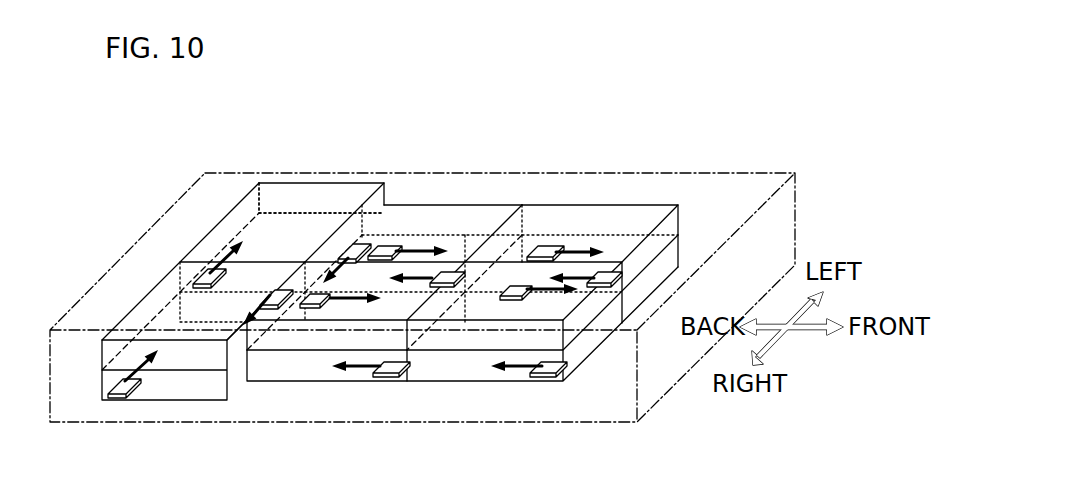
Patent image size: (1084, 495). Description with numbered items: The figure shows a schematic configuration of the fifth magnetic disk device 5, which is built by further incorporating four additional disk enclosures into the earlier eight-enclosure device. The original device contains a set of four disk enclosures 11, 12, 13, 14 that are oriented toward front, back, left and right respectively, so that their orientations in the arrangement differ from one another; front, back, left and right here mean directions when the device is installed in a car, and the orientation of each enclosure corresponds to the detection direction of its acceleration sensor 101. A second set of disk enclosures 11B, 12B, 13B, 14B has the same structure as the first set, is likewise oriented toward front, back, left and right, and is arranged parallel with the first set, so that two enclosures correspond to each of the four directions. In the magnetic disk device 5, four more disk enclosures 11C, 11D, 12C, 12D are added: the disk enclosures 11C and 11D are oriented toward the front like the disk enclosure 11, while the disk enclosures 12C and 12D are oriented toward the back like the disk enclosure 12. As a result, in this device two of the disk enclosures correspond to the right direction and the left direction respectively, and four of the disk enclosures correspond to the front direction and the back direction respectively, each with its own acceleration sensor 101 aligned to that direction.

The magnetic disk device 5 is at (720, 173).
The disk enclosure 11 is at (357, 381).
The disk enclosure 11B is at (407, 205).
The disk enclosure 11C is at (517, 381).
The disk enclosure 11D is at (622, 235).
The disk enclosure 12 is at (318, 320).
The disk enclosure 12B is at (465, 235).
The disk enclosure 12C is at (450, 320).
The disk enclosure 12D is at (567, 205).
The disk enclosure 13 is at (206, 400).
The disk enclosure 13B is at (230, 210).
The disk enclosure 14 is at (128, 317).
The disk enclosure 14B is at (240, 232).
The acceleration sensor 101 is at (355, 243).